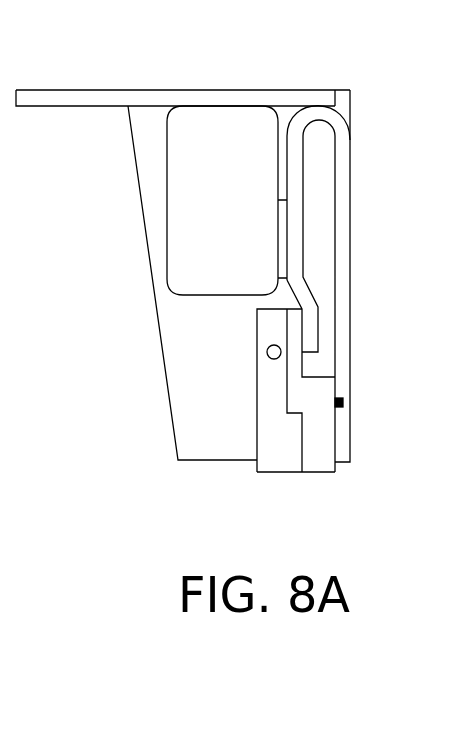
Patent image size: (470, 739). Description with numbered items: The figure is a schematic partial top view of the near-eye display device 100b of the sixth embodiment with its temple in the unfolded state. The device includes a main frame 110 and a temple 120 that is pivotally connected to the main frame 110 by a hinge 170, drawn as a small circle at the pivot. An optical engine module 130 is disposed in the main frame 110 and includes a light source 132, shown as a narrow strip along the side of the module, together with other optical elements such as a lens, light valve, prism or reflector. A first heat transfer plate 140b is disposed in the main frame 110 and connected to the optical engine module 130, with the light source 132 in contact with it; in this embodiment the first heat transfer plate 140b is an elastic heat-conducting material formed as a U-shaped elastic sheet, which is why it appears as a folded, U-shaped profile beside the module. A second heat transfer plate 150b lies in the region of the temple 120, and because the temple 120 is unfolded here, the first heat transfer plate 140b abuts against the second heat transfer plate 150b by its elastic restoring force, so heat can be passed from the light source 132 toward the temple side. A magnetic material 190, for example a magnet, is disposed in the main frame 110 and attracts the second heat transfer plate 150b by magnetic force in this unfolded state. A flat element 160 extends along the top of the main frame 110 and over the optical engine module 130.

The near-eye display device 100b is at (418, 508).
The main frame 110 is at (343, 99).
The temple 120 is at (272, 398).
The optical engine module 130 is at (183, 213).
The light source 132 is at (283, 240).
The first heat transfer plate 140b is at (298, 130).
The second heat transfer plate 150b is at (320, 443).
The cover 160 is at (166, 96).
The hinge 170 is at (267, 352).
The magnetic material 190 is at (343, 405).